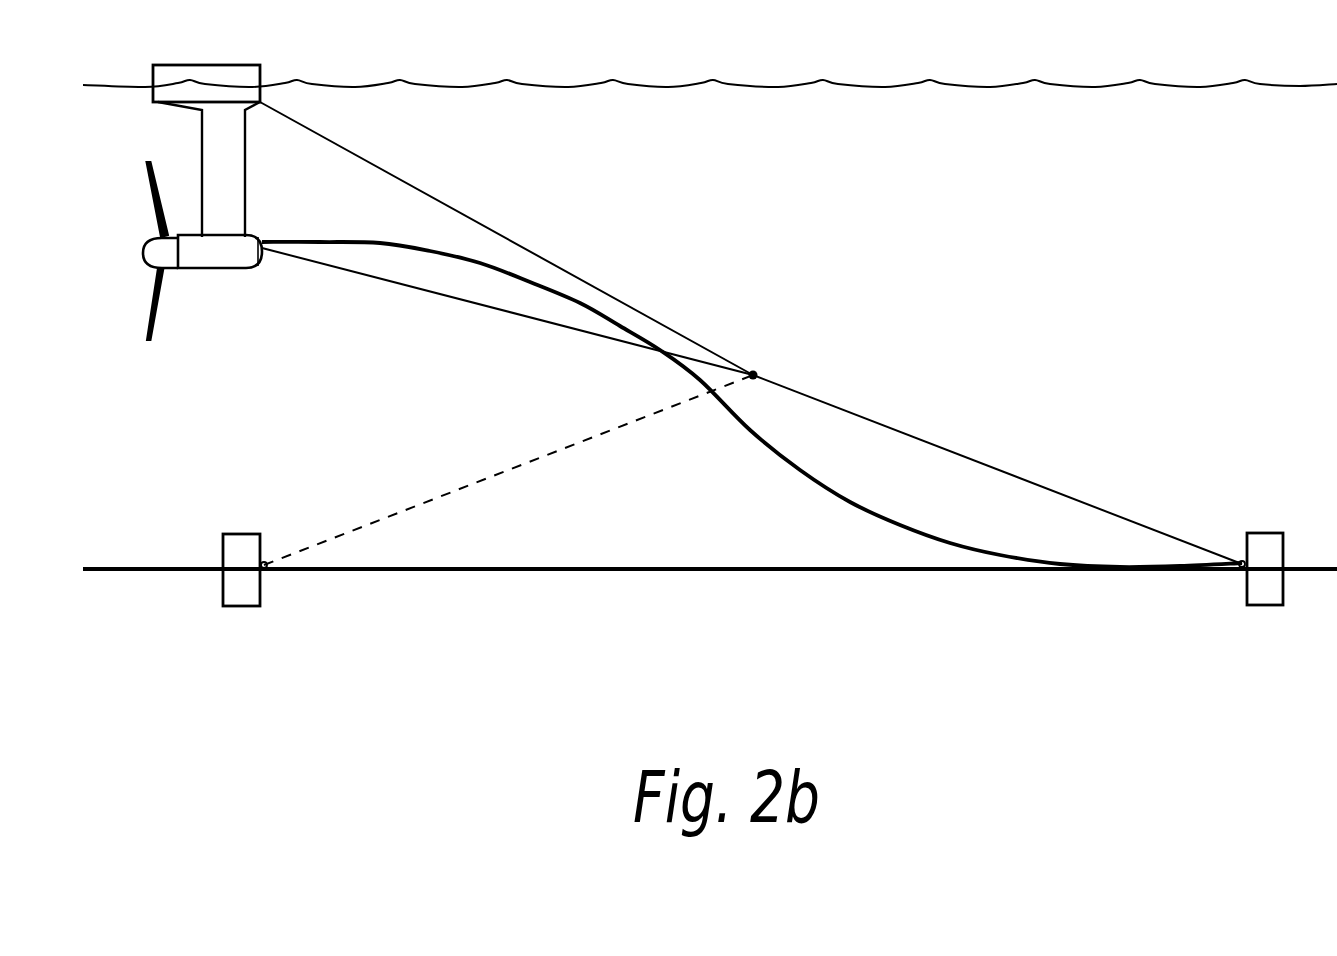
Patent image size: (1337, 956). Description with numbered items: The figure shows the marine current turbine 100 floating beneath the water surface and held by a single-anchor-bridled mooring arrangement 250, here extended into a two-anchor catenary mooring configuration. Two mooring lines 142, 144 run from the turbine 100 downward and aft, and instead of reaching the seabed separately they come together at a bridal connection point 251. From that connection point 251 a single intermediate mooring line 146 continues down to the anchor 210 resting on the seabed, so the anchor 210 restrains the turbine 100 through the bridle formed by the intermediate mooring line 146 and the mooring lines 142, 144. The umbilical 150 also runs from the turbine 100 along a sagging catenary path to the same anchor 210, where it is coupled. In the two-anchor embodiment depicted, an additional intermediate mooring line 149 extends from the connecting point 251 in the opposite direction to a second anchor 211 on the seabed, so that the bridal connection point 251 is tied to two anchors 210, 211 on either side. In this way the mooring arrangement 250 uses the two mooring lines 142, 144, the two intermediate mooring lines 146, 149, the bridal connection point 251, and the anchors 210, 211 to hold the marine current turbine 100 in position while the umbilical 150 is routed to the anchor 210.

The marine current turbine 100 is at (262, 74).
The mooring line 142 is at (457, 299).
The mooring line 144 is at (440, 202).
The intermediate mooring line 146 is at (1013, 476).
The additional intermediate mooring line 149 is at (476, 482).
The umbilical 150 is at (850, 502).
The anchor 210 is at (1247, 592).
The second anchor 211 is at (223, 554).
The single-anchor-bridled mooring arrangement 250 is at (1094, 201).
The bridal connection point 251 is at (757, 374).